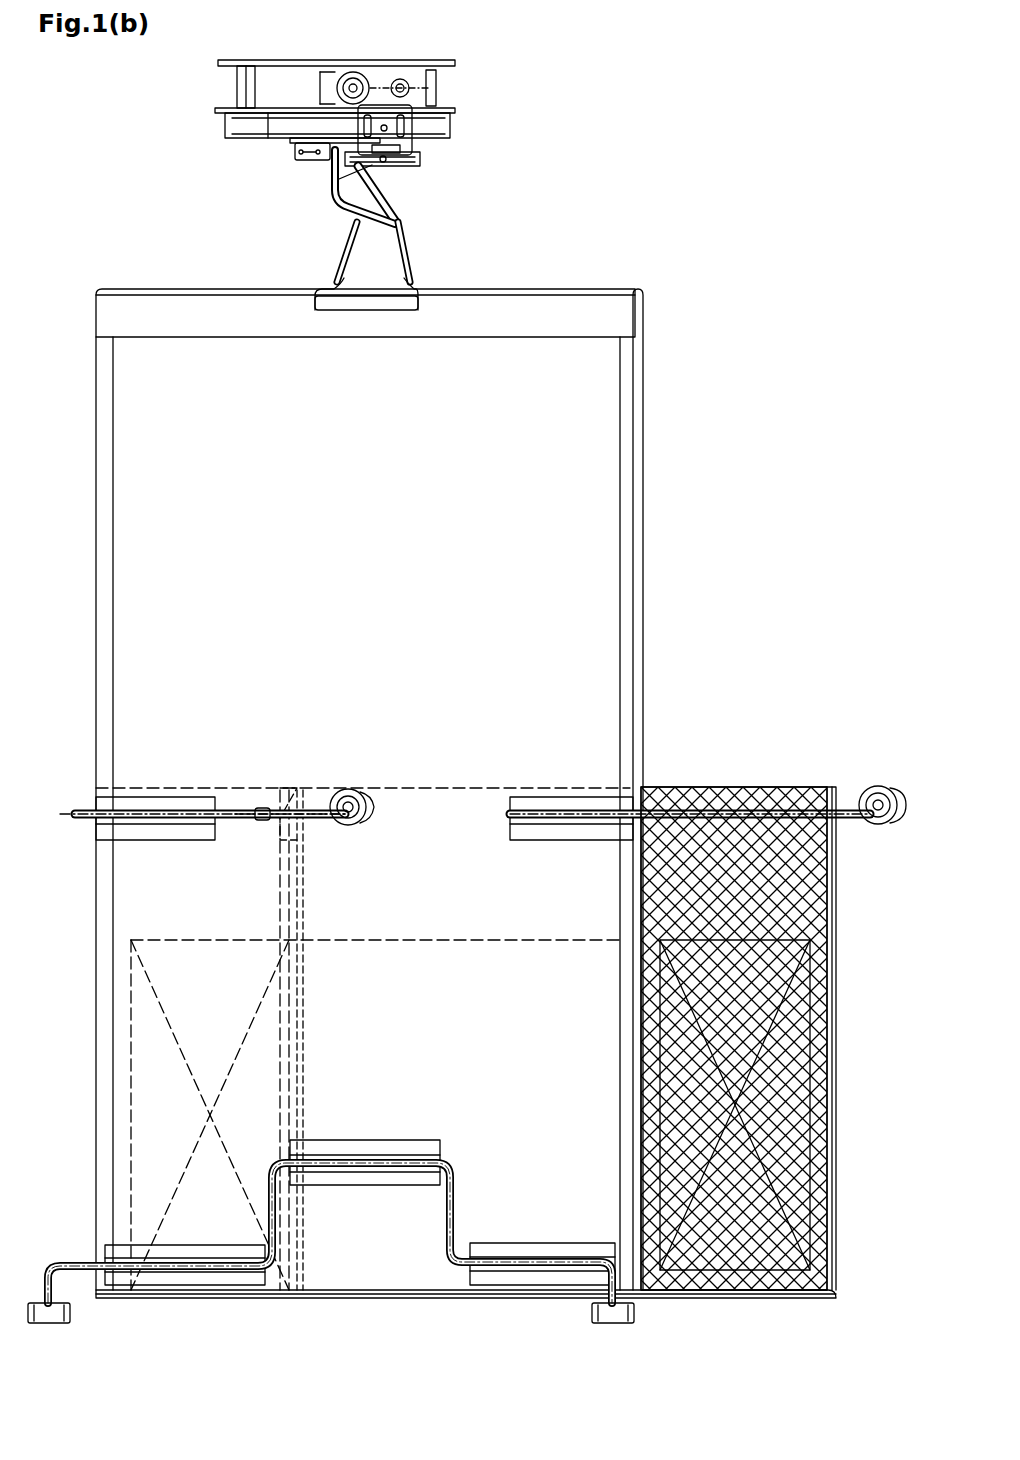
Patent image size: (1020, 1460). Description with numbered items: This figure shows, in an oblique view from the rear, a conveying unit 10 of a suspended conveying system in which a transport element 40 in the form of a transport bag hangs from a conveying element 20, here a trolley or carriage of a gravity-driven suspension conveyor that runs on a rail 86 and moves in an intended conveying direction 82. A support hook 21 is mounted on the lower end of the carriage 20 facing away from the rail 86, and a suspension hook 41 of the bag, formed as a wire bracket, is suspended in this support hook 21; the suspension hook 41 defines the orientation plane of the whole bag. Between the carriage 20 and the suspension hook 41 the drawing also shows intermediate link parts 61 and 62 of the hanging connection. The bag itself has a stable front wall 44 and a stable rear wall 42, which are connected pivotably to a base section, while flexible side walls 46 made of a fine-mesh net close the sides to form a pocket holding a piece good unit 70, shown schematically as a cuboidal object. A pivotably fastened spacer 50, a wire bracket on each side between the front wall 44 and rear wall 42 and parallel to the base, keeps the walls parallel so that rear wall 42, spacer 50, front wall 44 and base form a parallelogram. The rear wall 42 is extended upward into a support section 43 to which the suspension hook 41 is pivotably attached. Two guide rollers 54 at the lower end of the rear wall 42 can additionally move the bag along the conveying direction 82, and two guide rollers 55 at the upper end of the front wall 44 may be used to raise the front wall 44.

The conveying unit 10 is at (718, 242).
The conveying element 20 is at (392, 108).
The support hook 21 is at (383, 183).
The transport element 40 is at (768, 647).
The suspension hook 41 is at (395, 240).
The rear wall 42 is at (148, 890).
The support section 43 is at (604, 410).
The front wall 44 is at (834, 1122).
The side walls 46 is at (792, 912).
The spacer 50 is at (700, 790).
The guide rollers 54 is at (54, 1316).
The guide rollers 55 is at (882, 788).
The chain link 61 is at (388, 198).
The hook 62 is at (347, 199).
The piece good unit 70 is at (808, 1036).
The conveying direction 82 is at (400, 50).
The rail 86 is at (268, 96).